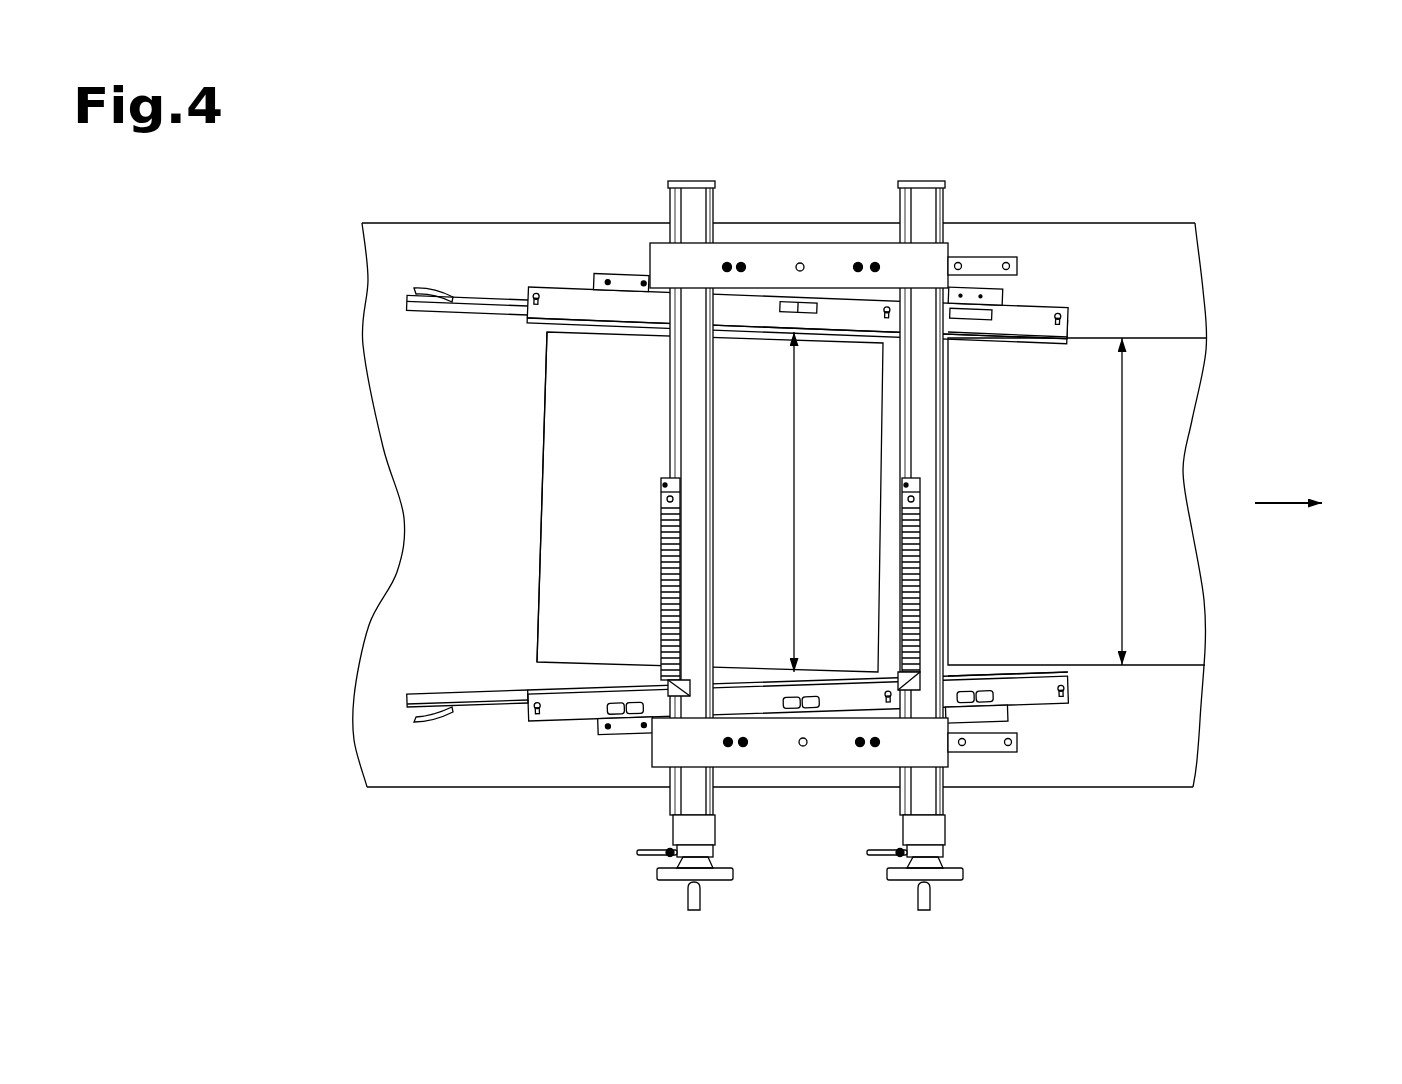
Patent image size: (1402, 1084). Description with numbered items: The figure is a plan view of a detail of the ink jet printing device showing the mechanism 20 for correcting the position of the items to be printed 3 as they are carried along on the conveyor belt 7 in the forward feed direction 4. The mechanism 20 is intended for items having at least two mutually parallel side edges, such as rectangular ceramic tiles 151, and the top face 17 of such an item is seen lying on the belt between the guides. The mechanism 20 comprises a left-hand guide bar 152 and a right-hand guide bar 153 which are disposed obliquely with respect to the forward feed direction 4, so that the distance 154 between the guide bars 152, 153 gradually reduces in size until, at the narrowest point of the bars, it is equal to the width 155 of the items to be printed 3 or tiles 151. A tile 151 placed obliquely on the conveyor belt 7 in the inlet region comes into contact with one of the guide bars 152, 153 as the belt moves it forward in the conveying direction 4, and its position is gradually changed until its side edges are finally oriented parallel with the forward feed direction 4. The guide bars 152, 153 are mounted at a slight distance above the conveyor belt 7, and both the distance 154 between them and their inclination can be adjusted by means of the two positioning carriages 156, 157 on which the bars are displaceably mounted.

The items to be printed 3 is at (522, 411).
The forward feed direction 4 is at (1264, 503).
The conveyor belt 7 is at (1140, 203).
The top face 17 is at (1063, 392).
The mechanism for correcting the position 20 is at (642, 255).
The ceramic tiles 151 is at (534, 568).
The left-hand guide bar 152 is at (1013, 350).
The right-hand guide bar 153 is at (977, 658).
The distance between the guide bars 154 is at (798, 560).
The width of the items to be printed 155 is at (1124, 455).
The positioning carriage 156 is at (657, 805).
The positioning carriage 157 is at (977, 813).